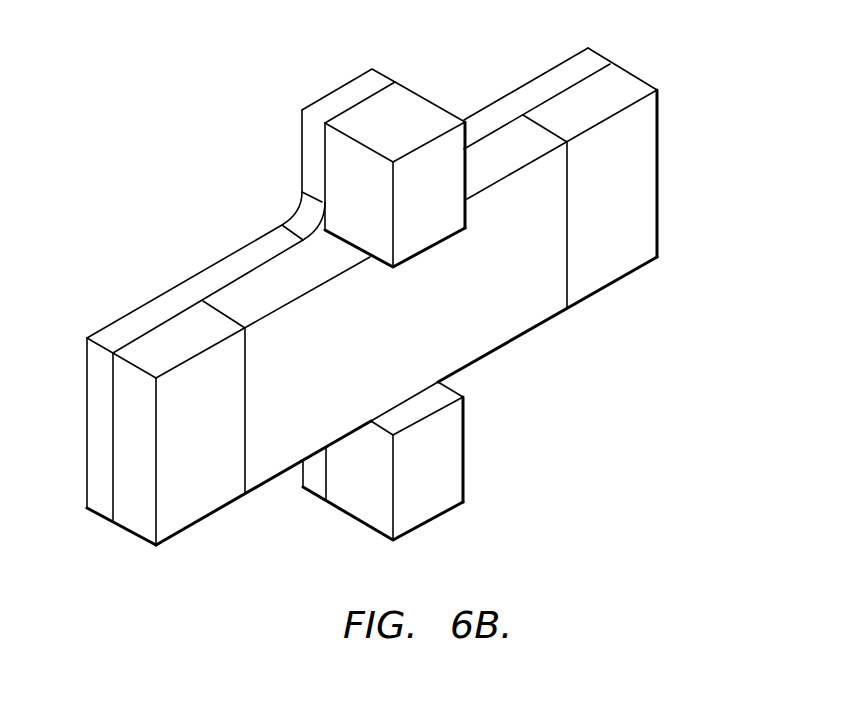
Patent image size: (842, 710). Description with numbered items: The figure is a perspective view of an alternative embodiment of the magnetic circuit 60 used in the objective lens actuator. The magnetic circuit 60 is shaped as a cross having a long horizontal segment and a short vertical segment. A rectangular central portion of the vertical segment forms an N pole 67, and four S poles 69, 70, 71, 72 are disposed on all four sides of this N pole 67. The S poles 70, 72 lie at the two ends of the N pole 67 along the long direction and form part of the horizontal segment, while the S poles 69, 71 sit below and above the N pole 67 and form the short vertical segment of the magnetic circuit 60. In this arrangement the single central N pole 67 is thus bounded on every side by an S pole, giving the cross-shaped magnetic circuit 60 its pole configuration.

The magnetic circuit 60 is at (397, 320).
The N pole 67 is at (523, 320).
The S pole 69 is at (433, 518).
The S pole 70 is at (636, 222).
The S pole 71 is at (423, 123).
The S pole 72 is at (170, 508).